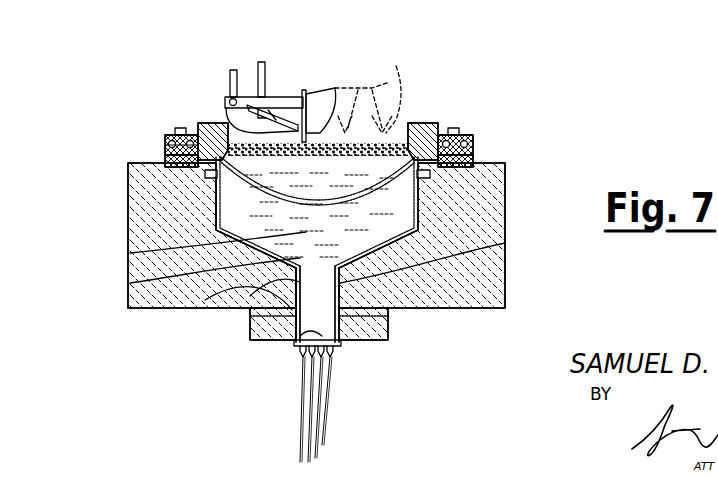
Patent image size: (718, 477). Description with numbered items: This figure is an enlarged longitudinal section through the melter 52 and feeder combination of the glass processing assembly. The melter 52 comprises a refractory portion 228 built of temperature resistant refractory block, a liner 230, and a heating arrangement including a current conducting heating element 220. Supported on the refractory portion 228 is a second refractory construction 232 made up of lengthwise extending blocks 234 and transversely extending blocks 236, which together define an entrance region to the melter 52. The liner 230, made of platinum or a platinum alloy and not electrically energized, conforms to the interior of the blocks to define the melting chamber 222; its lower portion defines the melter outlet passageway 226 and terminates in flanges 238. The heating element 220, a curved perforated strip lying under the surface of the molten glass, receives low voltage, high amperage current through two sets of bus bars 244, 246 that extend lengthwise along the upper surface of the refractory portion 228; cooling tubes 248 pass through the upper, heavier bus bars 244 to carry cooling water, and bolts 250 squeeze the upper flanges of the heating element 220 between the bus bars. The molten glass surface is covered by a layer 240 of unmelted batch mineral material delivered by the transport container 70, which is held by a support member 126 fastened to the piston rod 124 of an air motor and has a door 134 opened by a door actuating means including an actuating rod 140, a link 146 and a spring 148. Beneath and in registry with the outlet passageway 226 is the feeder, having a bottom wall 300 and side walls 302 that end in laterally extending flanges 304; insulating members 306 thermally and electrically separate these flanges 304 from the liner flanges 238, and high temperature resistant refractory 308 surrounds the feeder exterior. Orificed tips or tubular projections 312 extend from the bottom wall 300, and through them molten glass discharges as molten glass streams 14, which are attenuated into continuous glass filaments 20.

The molten glass streams 14 is at (301, 354).
The continuous glass filaments 20 is at (318, 430).
The melter 52 is at (488, 150).
The transport container 70 is at (324, 95).
The piston rod 124 is at (234, 70).
The support member 126 is at (302, 90).
The door 134 is at (211, 124).
The actuating rod 140 is at (262, 62).
The link 146 is at (232, 130).
The spring 148 is at (298, 112).
The current conducting heating element 220 is at (200, 230).
The melting chamber 222 is at (131, 255).
The melter outlet passageway 226 is at (131, 283).
The refractory portion 228 is at (122, 312).
The liner 230 is at (236, 232).
The second refractory construction 232 is at (207, 118).
The lengthwise extending blocks 234 is at (412, 124).
The transversely extending blocks 236 is at (456, 128).
The flanges 238 is at (505, 243).
The layer of unmelted batch mineral material 240 is at (437, 127).
The bus bars 244 is at (167, 140).
The bus bars 246 is at (165, 161).
The cooling tubes 248 is at (166, 150).
The bolts 250 is at (177, 131).
The bottom wall 300 is at (310, 340).
The side walls 302 is at (300, 332).
The flanges 304 is at (268, 332).
The insulating members 306 is at (258, 318).
The high temperature resistant refractory 308 is at (388, 322).
The orificed tips or tubular projections 312 is at (320, 344).